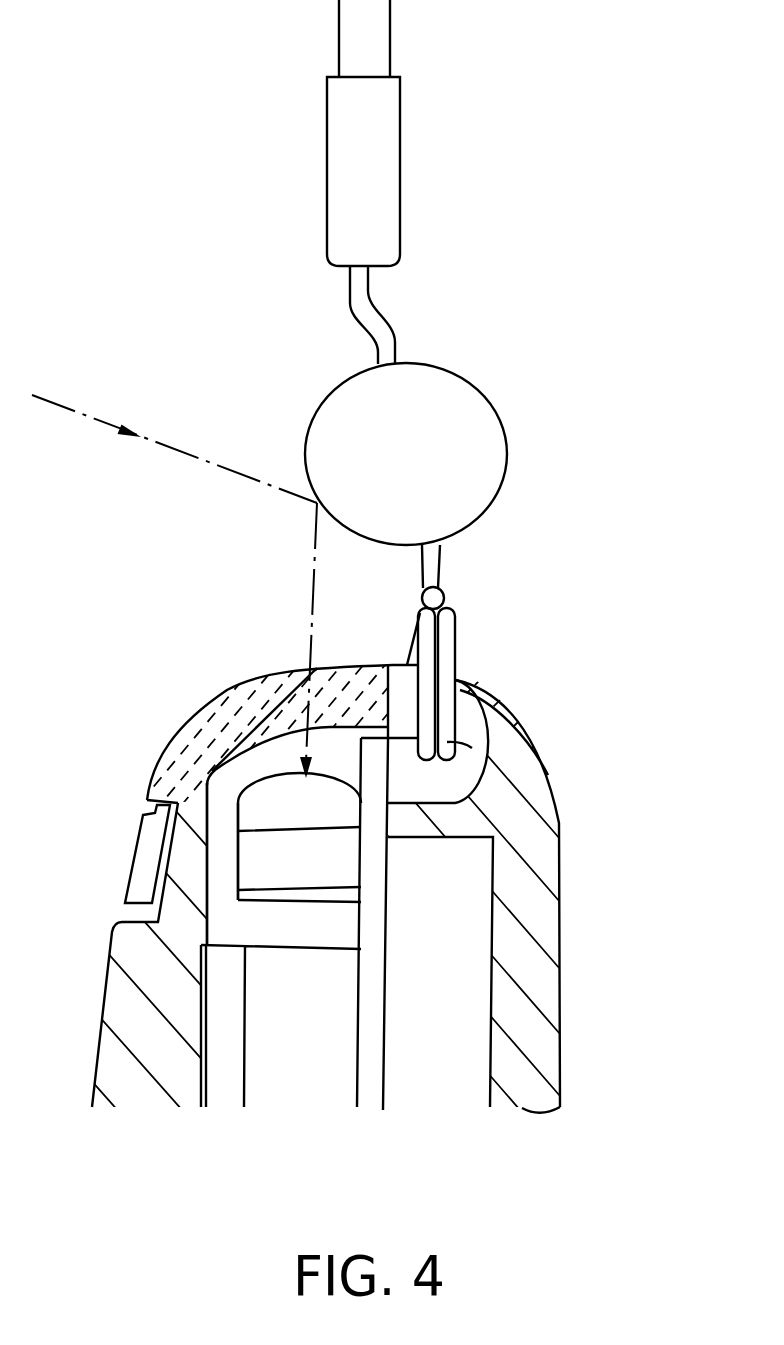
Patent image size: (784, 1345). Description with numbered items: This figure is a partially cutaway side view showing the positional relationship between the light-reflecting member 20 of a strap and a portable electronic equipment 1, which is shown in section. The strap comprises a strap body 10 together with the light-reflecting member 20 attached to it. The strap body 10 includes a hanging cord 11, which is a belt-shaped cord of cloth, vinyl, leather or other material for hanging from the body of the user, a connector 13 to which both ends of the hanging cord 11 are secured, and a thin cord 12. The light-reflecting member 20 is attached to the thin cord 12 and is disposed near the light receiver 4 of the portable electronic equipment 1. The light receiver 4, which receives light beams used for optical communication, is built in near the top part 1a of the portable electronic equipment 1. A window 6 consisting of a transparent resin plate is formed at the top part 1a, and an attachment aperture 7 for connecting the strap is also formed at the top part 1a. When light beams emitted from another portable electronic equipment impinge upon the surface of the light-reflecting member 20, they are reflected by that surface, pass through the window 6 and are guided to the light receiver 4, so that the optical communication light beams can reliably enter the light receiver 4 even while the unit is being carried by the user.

The portable electronic equipment 1 is at (516, 694).
The top part 1a is at (388, 667).
The light receiver 4 is at (273, 802).
The window 6 is at (248, 682).
The attachment aperture 7 is at (454, 778).
The strap body 10 is at (503, 90).
The hanging cord 11 is at (390, 40).
The thin cord 12 is at (381, 318).
The connector 13 is at (397, 155).
The light-reflecting member 20 is at (508, 441).